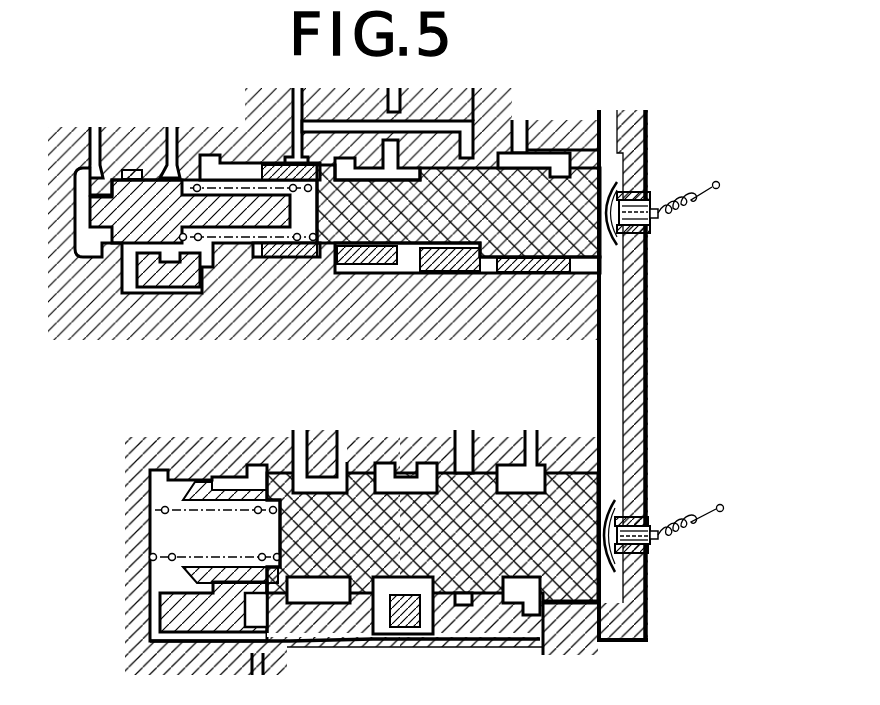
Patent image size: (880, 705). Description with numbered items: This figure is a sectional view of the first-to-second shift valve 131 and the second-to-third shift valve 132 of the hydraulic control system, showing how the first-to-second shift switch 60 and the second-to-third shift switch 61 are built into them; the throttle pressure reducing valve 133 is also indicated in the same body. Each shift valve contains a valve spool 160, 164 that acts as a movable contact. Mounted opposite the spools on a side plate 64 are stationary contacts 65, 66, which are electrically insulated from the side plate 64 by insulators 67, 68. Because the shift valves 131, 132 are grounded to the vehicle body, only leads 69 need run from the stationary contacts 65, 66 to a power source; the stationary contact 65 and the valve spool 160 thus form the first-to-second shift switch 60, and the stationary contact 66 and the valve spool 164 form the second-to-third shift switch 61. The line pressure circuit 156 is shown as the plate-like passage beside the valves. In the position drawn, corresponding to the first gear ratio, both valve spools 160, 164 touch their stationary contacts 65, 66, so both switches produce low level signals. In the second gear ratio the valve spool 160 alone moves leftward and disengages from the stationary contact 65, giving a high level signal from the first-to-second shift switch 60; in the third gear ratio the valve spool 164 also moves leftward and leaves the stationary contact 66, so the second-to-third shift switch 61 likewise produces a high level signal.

The 1-2 shift switch 60 is at (668, 560).
The 2-3 shift switch 61 is at (658, 168).
The side plate 64 is at (637, 641).
The stationary contact 65 is at (645, 550).
The stationary contact 66 is at (654, 221).
The insulator 67 is at (648, 558).
The insulator 68 is at (655, 236).
The leads 69 is at (690, 200).
The 1-2 shift valve 131 is at (561, 618).
The 2-3 shift valve 132 is at (588, 82).
The throttle pressure reducing valve 133 is at (107, 258).
The circuit 156 is at (610, 378).
The valve spool 160 is at (415, 510).
The valve spool 164 is at (521, 243).